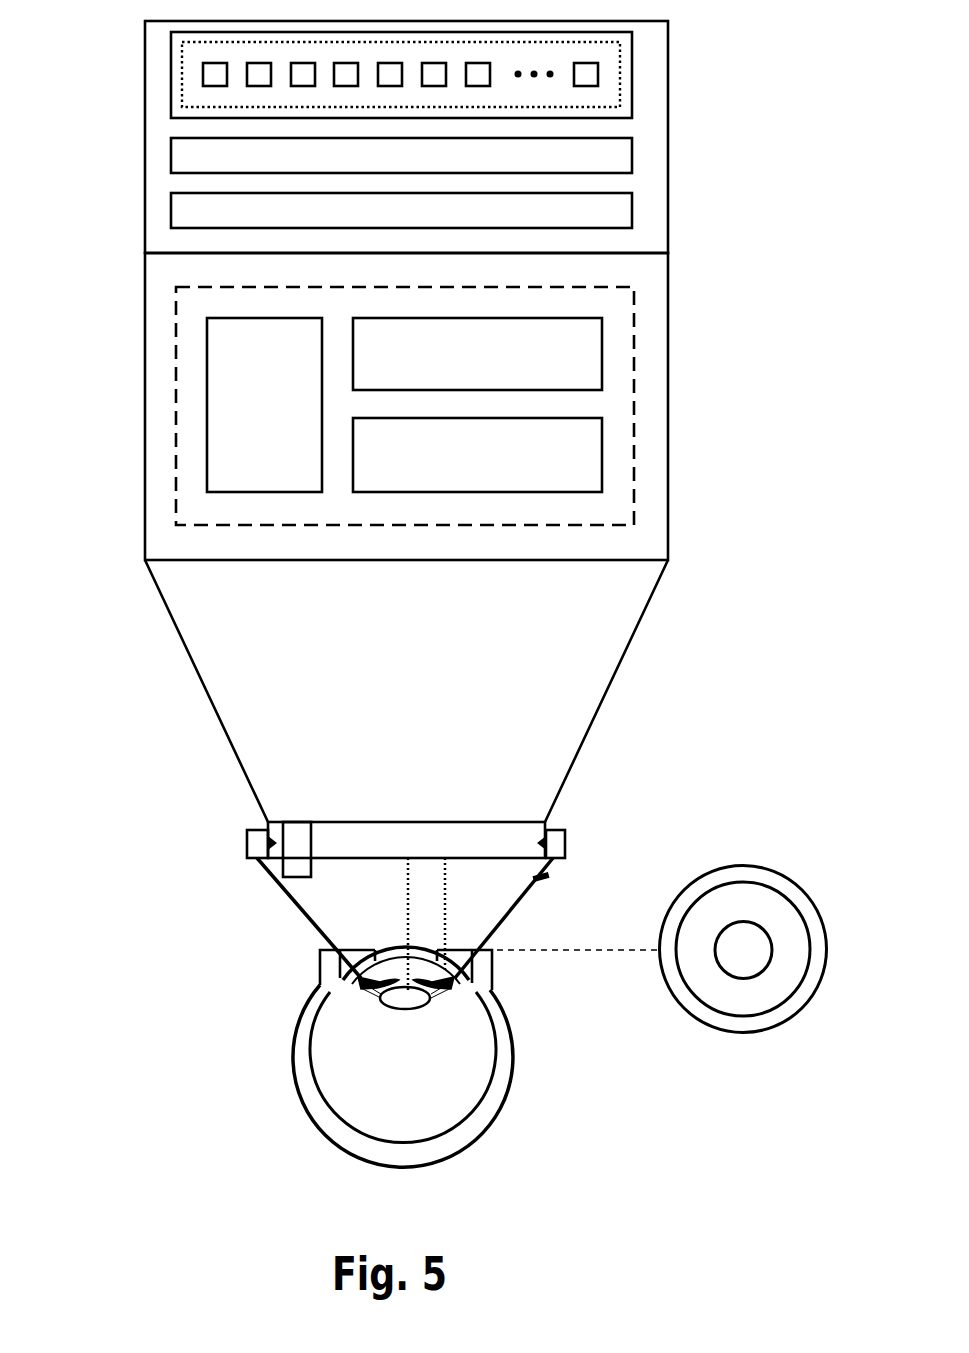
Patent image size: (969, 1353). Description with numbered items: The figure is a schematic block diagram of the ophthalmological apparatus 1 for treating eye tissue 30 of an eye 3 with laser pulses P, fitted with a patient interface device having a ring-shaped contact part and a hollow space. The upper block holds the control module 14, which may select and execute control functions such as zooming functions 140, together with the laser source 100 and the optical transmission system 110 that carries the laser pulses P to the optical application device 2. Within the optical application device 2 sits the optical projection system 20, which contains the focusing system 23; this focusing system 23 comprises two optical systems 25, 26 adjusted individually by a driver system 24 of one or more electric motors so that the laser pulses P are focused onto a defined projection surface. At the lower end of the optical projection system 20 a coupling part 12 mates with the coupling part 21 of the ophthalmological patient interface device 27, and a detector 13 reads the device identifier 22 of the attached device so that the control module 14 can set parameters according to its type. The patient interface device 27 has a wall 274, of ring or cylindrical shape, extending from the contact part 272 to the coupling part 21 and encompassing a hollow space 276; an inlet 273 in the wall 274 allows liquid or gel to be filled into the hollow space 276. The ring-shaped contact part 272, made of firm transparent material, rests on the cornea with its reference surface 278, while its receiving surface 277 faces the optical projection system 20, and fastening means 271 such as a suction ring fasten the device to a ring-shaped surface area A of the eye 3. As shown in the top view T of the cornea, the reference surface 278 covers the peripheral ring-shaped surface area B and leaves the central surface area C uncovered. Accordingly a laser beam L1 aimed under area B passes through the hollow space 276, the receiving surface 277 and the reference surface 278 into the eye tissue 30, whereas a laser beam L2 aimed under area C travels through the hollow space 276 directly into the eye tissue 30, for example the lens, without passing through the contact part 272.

The ophthalmological apparatus 1 is at (133, 174).
The control module 14 is at (182, 73).
The zooming functions 140 is at (613, 73).
The laser source 100 is at (620, 157).
The optical transmission system 110 is at (622, 211).
The optical projection system 20 is at (116, 609).
The focusing system 23 is at (175, 403).
The driver system 24 is at (222, 430).
The optical system 25 is at (588, 347).
The optical system 26 is at (588, 467).
The coupling part 12 is at (517, 832).
The detector 13 is at (300, 828).
The optical application device 2 is at (149, 894).
The coupling part 21 is at (559, 845).
The device identifier 22 is at (281, 868).
The ophthalmological patient interface device 27 is at (274, 939).
The fastening means 271 is at (335, 983).
The ring-shaped contact part 272 is at (463, 958).
The inlet 273 is at (554, 879).
The wall 274 is at (512, 917).
The hollow space 276 is at (312, 910).
The receiving surface 277 is at (356, 944).
The reference surface 278 is at (350, 982).
The eye 3 is at (284, 1109).
The eye tissue 30 is at (497, 1075).
The laser beam L1 is at (467, 914).
The laser beam L2 is at (388, 925).
The laser pulses P is at (447, 918).
The top view of the cornea T is at (681, 1040).
The ring-shaped surface area A is at (685, 993).
The peripheral surface area B is at (725, 1000).
The central surface area C is at (748, 963).